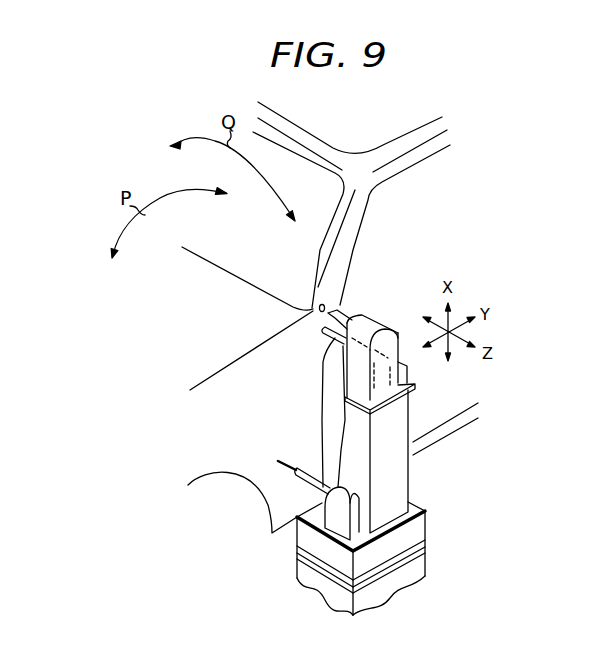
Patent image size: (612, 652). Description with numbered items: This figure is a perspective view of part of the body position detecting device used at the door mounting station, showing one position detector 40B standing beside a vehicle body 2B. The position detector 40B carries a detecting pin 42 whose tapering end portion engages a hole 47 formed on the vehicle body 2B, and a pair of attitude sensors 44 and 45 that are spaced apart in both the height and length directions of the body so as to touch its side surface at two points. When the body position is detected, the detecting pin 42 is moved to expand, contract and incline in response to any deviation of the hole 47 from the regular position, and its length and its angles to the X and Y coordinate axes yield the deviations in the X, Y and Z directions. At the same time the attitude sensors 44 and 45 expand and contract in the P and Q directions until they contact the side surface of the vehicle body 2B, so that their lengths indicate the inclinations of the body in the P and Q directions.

The vehicle body 2B is at (413, 158).
The hole 47 is at (318, 304).
The detecting pin 42 is at (344, 312).
The attitude sensor 44 is at (330, 347).
The attitude sensor 45 is at (300, 470).
The position detector 40B is at (440, 468).